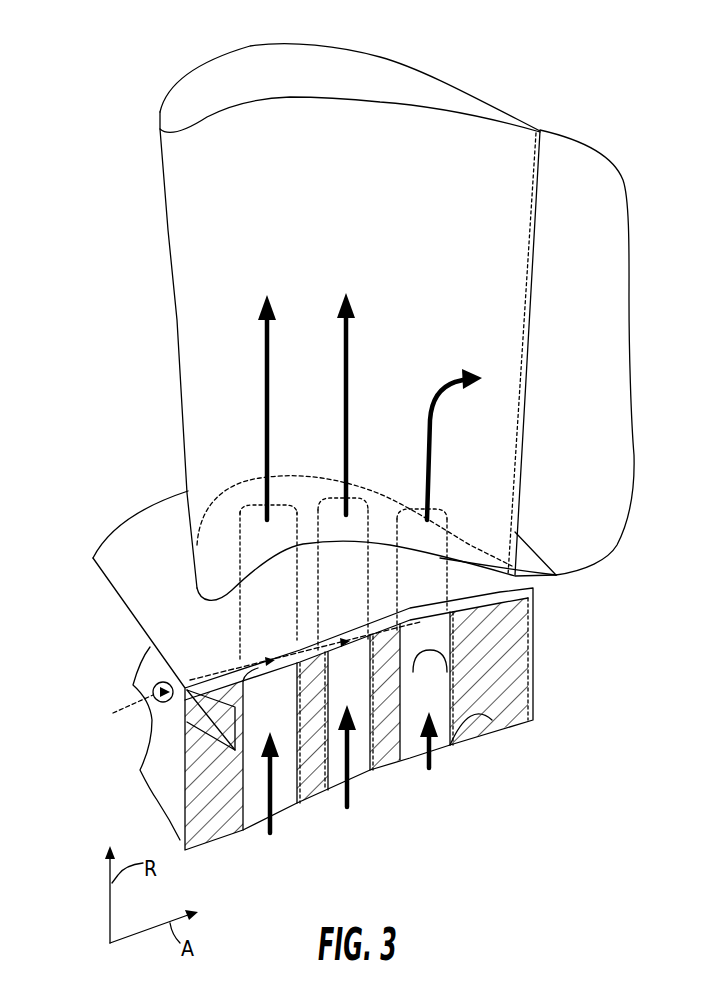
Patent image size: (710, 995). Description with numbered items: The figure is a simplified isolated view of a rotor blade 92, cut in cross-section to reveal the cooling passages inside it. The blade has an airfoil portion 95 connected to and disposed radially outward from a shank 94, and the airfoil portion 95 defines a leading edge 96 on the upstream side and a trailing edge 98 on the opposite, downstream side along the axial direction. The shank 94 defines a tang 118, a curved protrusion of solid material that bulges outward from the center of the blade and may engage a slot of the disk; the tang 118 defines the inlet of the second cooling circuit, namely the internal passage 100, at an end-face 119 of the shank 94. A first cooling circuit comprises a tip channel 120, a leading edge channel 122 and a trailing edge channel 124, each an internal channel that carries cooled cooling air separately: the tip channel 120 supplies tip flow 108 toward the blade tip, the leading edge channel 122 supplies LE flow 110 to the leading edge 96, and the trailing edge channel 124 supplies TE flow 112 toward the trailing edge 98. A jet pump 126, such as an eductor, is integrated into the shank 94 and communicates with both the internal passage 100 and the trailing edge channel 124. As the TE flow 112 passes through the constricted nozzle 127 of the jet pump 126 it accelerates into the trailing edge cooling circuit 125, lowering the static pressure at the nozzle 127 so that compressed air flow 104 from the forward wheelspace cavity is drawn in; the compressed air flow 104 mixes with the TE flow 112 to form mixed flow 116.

The rotor blade 92 is at (491, 156).
The shank 94 is at (535, 683).
The airfoil portion 95 is at (631, 342).
The leading edge 96 is at (176, 320).
The trailing edge 98 is at (532, 280).
The internal passage 100 is at (200, 660).
The compressed air flow 104 is at (123, 712).
The tip flow 108 is at (342, 370).
The LE flow 110 is at (265, 418).
The TE flow 112 is at (415, 763).
The mixed flow 116 is at (433, 418).
The tang 118 is at (133, 686).
The end-face 119 is at (166, 784).
The tip channel 120 is at (362, 768).
The leading edge channel 122 is at (290, 794).
The trailing edge channel 124 is at (445, 748).
The trailing edge cooling circuit 125 is at (517, 534).
The jet pump 126 is at (492, 721).
The nozzle 127 is at (533, 703).